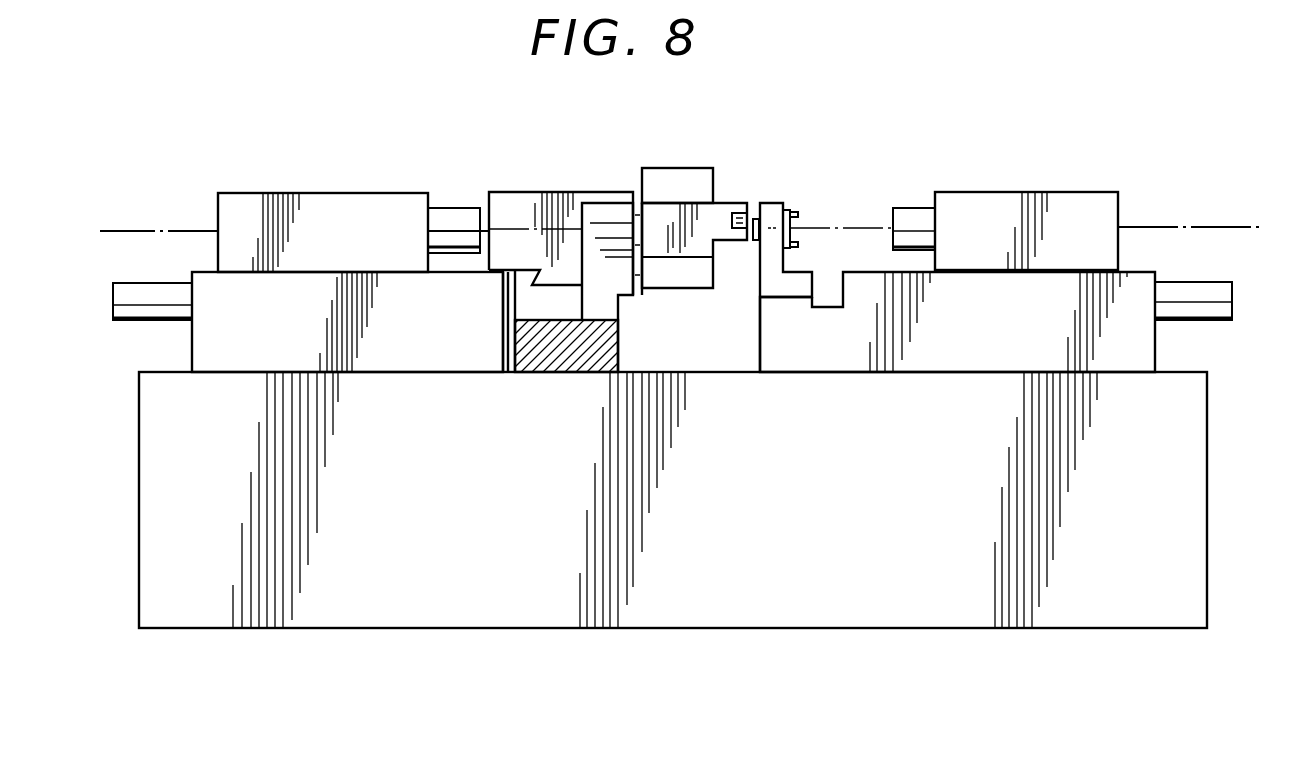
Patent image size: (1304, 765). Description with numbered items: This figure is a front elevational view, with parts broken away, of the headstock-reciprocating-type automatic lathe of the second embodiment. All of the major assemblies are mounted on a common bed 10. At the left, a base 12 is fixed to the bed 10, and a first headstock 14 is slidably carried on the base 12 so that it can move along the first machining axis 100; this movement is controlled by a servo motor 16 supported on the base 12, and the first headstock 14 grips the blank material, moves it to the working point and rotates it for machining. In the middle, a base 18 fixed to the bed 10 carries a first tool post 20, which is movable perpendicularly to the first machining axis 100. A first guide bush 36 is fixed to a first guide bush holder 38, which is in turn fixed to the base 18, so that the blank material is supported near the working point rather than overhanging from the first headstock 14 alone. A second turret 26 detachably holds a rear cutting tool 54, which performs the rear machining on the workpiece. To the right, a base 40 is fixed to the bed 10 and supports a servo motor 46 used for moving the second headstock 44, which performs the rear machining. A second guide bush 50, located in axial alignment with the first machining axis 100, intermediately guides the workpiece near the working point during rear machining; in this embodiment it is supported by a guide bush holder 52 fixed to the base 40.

The bed 10 is at (1190, 590).
The base 12 is at (386, 355).
The first headstock 14 is at (357, 207).
The servo motor 16 is at (137, 303).
The base 18 is at (553, 353).
The first tool post 20 is at (510, 207).
The second turret 26 is at (680, 200).
The first guide bush 36 is at (642, 230).
The first guide bush holder 38 is at (603, 213).
The base 40 is at (940, 353).
The second headstock 44 is at (988, 218).
The servo motor 46 is at (1198, 302).
The second guide bush 50 is at (793, 223).
The second guide bush holder 52 is at (768, 280).
The rear cutting tool 54 is at (738, 213).
The first machining axis 100 is at (188, 228).